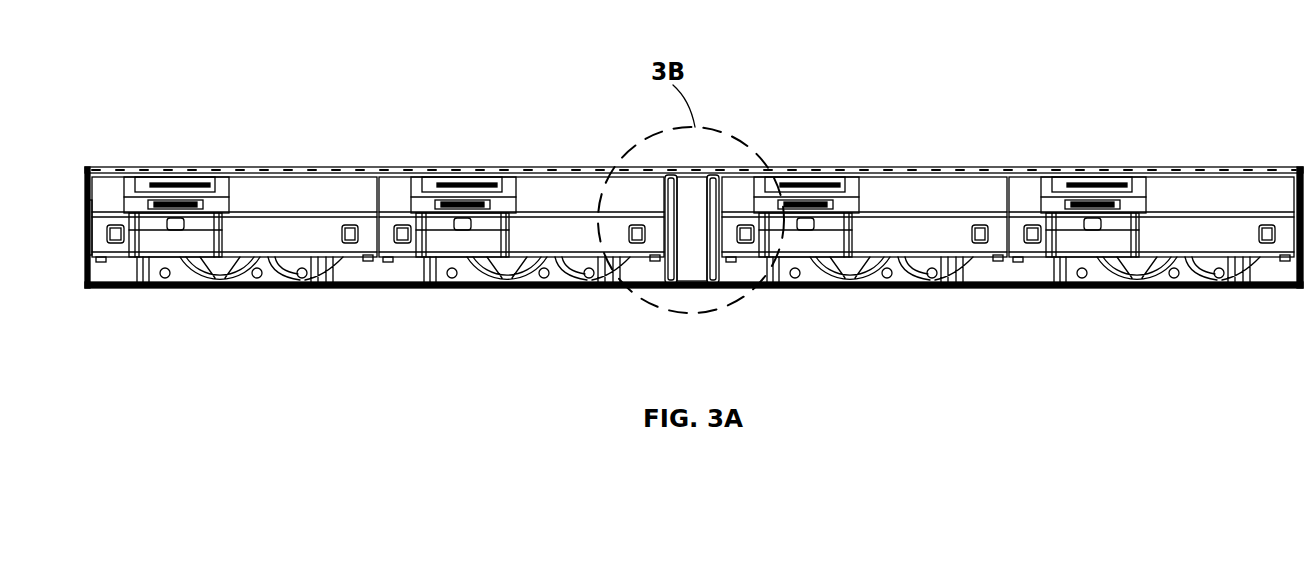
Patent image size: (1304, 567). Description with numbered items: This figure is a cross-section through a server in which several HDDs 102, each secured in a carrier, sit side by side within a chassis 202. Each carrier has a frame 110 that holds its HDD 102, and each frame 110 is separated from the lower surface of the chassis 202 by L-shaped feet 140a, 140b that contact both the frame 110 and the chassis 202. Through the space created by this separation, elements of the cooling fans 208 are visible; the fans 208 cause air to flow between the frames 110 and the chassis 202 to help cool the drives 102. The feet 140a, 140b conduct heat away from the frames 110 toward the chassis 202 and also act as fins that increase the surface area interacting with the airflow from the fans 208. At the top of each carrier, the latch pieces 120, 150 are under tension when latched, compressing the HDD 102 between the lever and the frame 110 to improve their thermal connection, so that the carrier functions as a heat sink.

The HDD 102 is at (275, 192).
The frame 110 is at (293, 238).
The latch piece 120 is at (125, 173).
The latch piece 150 is at (165, 185).
The foot 140a is at (310, 284).
The foot 140b is at (140, 284).
The cooling fan 208 is at (207, 284).
The chassis 202 is at (1300, 167).